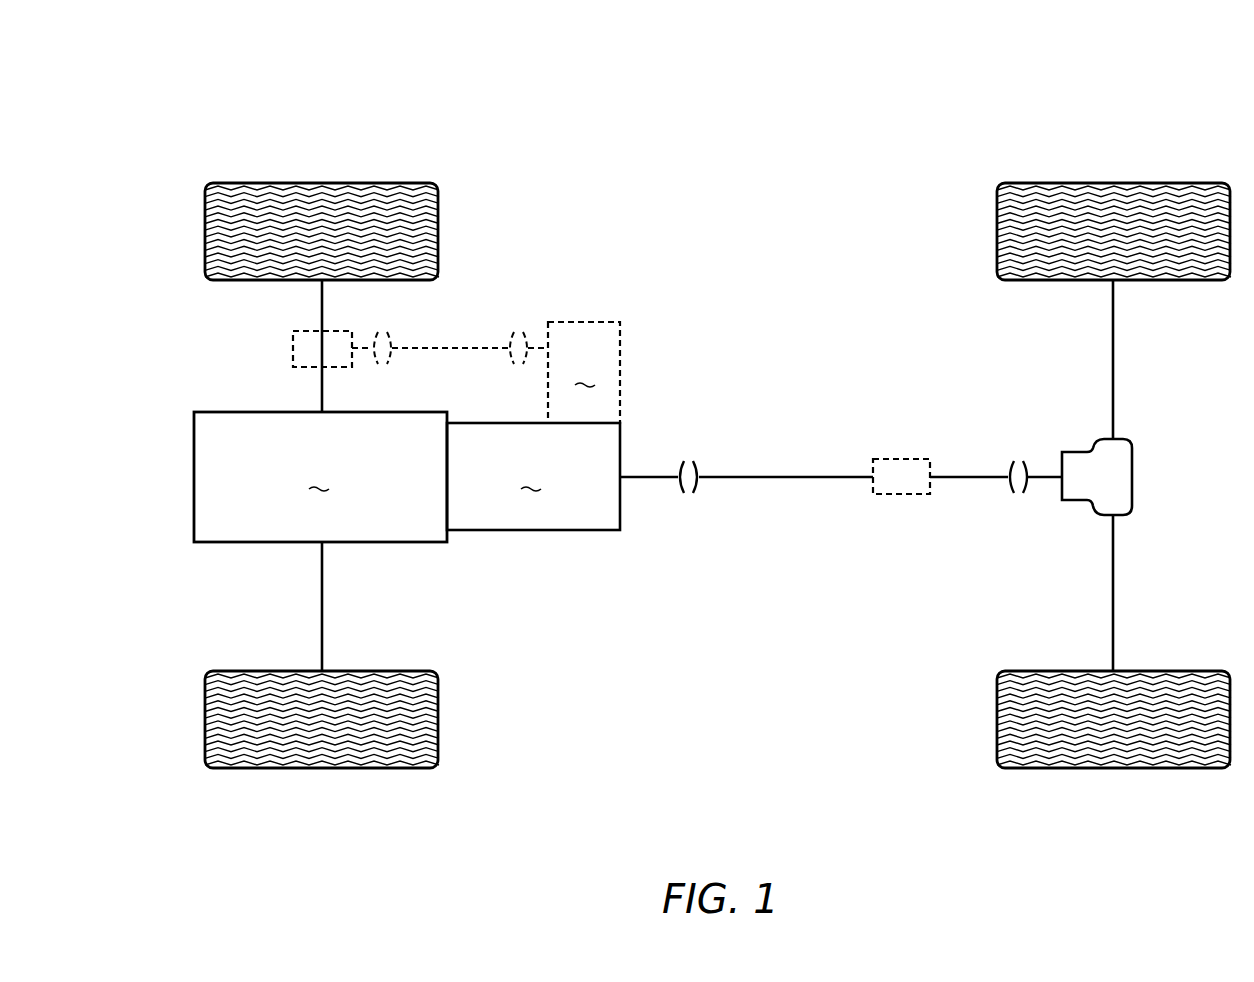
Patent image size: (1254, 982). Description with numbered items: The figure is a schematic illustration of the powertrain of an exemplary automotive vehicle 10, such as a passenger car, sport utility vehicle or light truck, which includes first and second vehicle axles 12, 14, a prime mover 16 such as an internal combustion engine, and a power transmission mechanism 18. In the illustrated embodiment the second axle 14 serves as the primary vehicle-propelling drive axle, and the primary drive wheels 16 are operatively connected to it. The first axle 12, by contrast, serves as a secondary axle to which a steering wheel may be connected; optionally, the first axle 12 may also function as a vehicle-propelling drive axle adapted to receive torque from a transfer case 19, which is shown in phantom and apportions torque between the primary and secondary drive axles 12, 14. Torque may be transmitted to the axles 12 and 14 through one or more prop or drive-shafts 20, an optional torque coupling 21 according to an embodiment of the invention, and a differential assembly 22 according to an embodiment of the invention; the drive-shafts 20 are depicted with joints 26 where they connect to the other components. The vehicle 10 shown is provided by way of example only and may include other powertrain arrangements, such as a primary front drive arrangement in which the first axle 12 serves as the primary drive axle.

The automotive vehicle 10 is at (732, 145).
The first vehicle axle 12 is at (322, 613).
The second vehicle axle 14 is at (1115, 362).
The prime mover 16 is at (1148, 190).
The power transmission mechanism 18 is at (343, 190).
The transfer case 19 is at (584, 372).
The drive-shaft 20 is at (452, 348).
The torque coupling 21 is at (880, 495).
The differential assembly 22 is at (294, 351).
The universal joint 26 is at (363, 348).